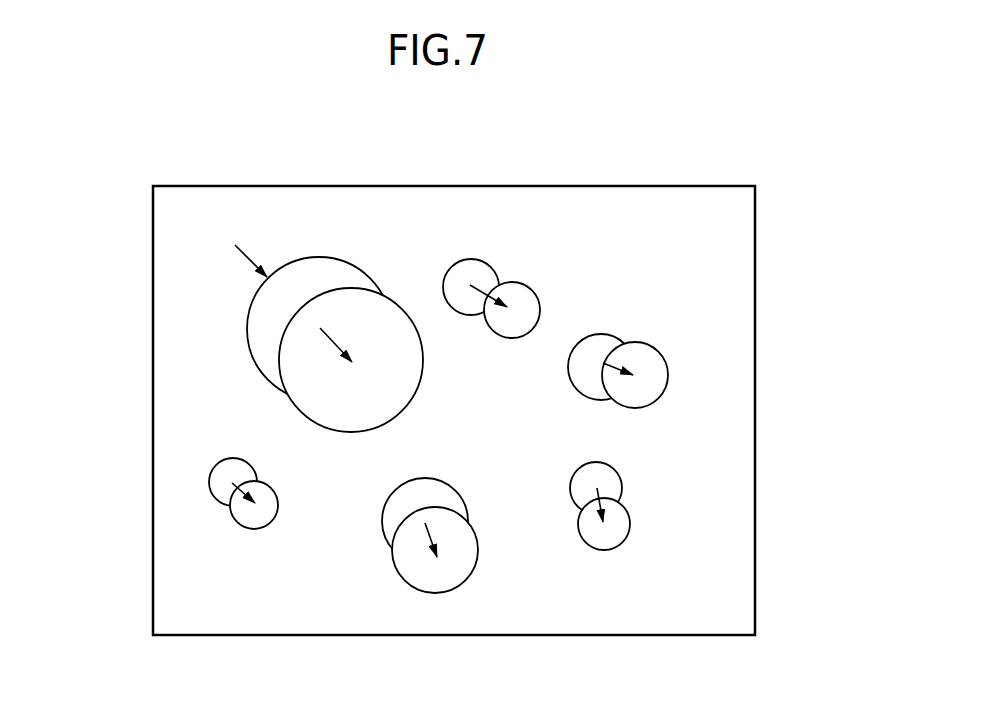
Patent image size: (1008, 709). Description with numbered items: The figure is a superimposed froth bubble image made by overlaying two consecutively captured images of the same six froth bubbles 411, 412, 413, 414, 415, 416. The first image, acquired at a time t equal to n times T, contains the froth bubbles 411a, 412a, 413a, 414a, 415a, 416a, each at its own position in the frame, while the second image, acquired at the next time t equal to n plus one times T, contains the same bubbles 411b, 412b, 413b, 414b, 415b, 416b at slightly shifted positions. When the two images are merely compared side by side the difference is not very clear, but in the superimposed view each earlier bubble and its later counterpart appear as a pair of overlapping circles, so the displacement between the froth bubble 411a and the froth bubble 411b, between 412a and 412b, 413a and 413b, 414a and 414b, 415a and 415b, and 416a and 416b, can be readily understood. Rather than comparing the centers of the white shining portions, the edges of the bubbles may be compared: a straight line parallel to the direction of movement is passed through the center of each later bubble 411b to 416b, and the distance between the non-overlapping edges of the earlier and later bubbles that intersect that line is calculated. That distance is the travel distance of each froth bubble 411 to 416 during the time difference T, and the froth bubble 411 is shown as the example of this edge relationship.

The froth bubble 411 is at (277, 273).
The froth bubble 411a is at (312, 255).
The froth bubble 411b is at (403, 305).
The froth bubble 412 is at (583, 224).
The froth bubble 412a is at (470, 258).
The froth bubble 412b is at (540, 308).
The froth bubble 413 is at (731, 371).
The froth bubble 413a is at (603, 334).
The froth bubble 413b is at (668, 370).
The froth bubble 414 is at (708, 522).
The froth bubble 414a is at (622, 487).
The froth bubble 414b is at (630, 517).
The froth bubble 415 is at (476, 593).
The froth bubble 415a is at (470, 508).
The froth bubble 415b is at (445, 597).
The froth bubble 416 is at (167, 571).
The froth bubble 416a is at (207, 483).
The froth bubble 416b is at (260, 532).